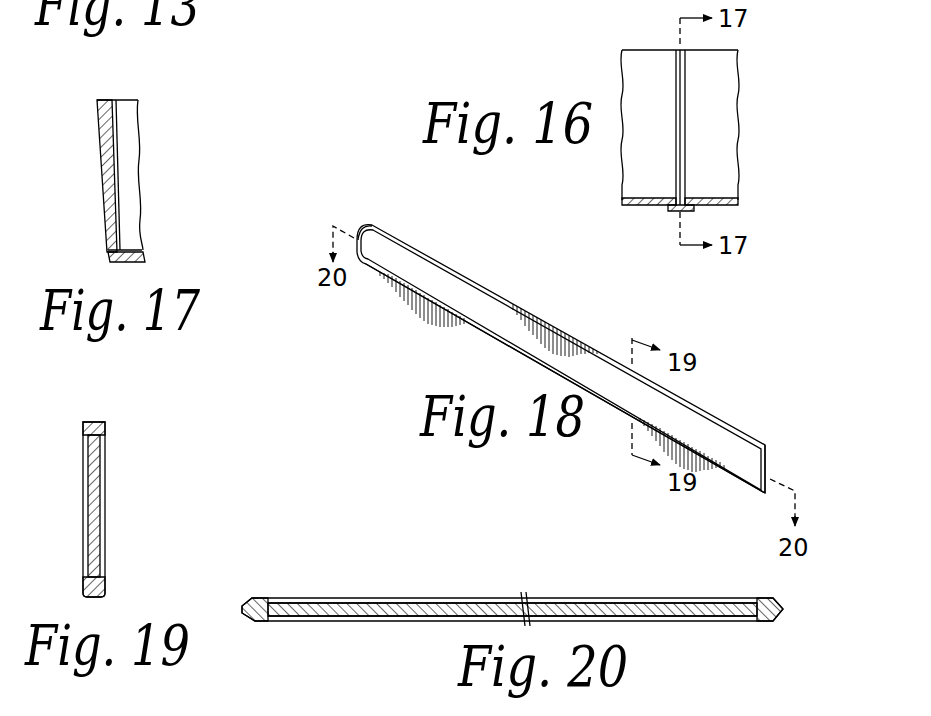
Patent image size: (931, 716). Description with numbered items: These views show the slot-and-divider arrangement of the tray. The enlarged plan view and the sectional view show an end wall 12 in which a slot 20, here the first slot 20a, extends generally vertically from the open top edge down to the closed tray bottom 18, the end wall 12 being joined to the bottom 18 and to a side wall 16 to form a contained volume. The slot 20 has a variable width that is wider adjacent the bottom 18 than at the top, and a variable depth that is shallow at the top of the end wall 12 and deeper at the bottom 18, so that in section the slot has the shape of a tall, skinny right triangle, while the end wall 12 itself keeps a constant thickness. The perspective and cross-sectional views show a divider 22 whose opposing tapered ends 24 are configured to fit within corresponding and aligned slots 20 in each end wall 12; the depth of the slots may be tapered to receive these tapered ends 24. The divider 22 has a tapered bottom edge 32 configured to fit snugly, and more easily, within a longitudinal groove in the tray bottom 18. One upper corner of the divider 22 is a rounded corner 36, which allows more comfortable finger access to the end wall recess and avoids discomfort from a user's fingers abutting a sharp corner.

In FIG. 16, the end wall 12 is at (638, 55).
In FIG. 17, the end wall 12 is at (97, 116).
In FIG. 17, the side wall 16 is at (130, 128).
In FIG. 17, the tray bottom 18 is at (130, 258).
In FIG. 17, the slot 20 is at (113, 185).
In FIG. 16, the slot 20a is at (686, 78).
In FIG. 18, the divider 22 is at (392, 250).
In FIG. 19, the divider 22 is at (97, 500).
In FIG. 20, the divider 22 is at (387, 597).
In FIG. 18, the tapered end 24 is at (771, 461).
In FIG. 20, the tapered end 24 is at (250, 601).
In FIG. 18, the tapered bottom edge 32 is at (474, 331).
In FIG. 19, the tapered bottom edge 32 is at (103, 596).
In FIG. 18, the rounded corner 36 is at (372, 229).